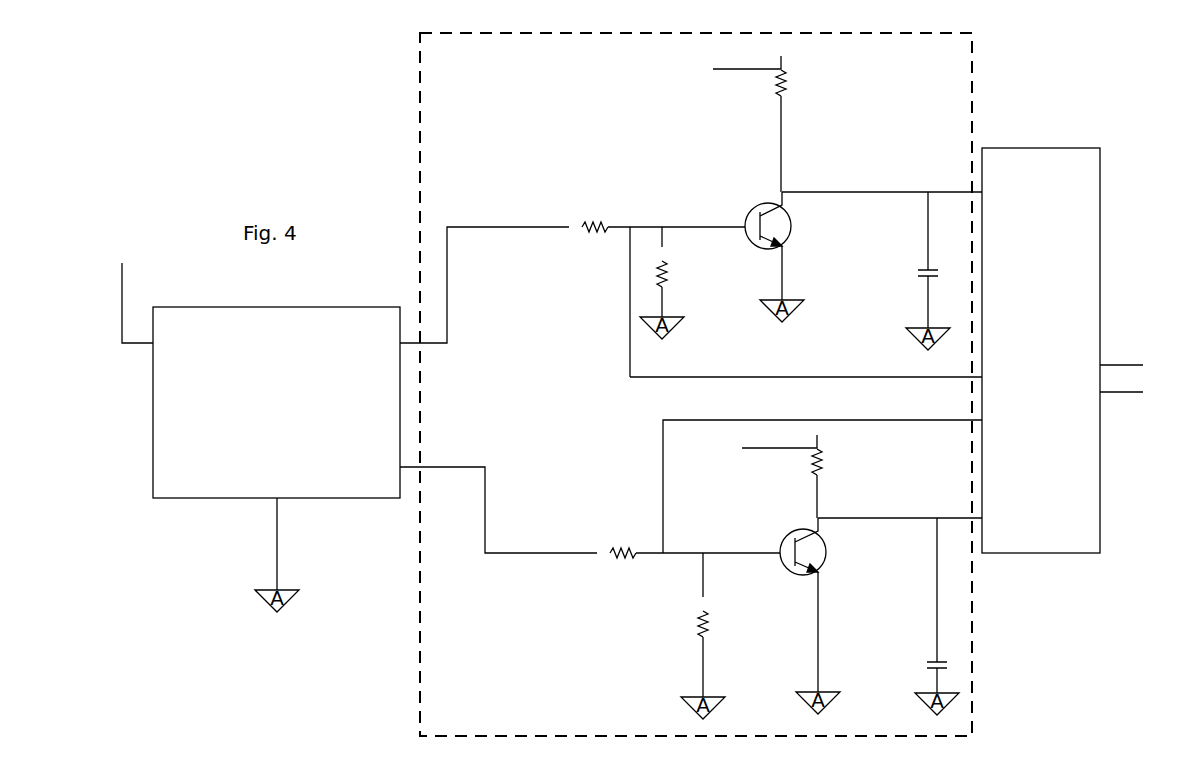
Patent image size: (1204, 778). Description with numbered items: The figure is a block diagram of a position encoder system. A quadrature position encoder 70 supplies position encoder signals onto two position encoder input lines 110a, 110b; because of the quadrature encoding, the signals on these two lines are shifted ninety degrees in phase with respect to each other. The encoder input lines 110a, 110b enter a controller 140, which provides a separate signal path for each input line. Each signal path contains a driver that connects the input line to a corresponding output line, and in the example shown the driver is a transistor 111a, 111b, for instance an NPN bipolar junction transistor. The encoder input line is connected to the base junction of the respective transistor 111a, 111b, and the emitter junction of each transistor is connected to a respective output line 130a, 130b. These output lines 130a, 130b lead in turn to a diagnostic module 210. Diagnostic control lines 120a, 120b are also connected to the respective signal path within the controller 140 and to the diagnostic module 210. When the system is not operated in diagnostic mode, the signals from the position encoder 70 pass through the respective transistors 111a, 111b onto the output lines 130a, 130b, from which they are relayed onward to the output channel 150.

The quadrature position encoder 70 is at (203, 453).
The controller 140 is at (420, 116).
The position encoder input line 110a is at (430, 345).
The position encoder input line 110b is at (438, 468).
The transistor 111a is at (765, 203).
The transistor 111b is at (820, 567).
The diagnostic control line 120a is at (868, 371).
The diagnostic control line 120b is at (847, 421).
The output line 130a is at (903, 192).
The output line 130b is at (945, 517).
The diagnostic module 210 is at (1062, 230).
The output channel 150 is at (1115, 393).